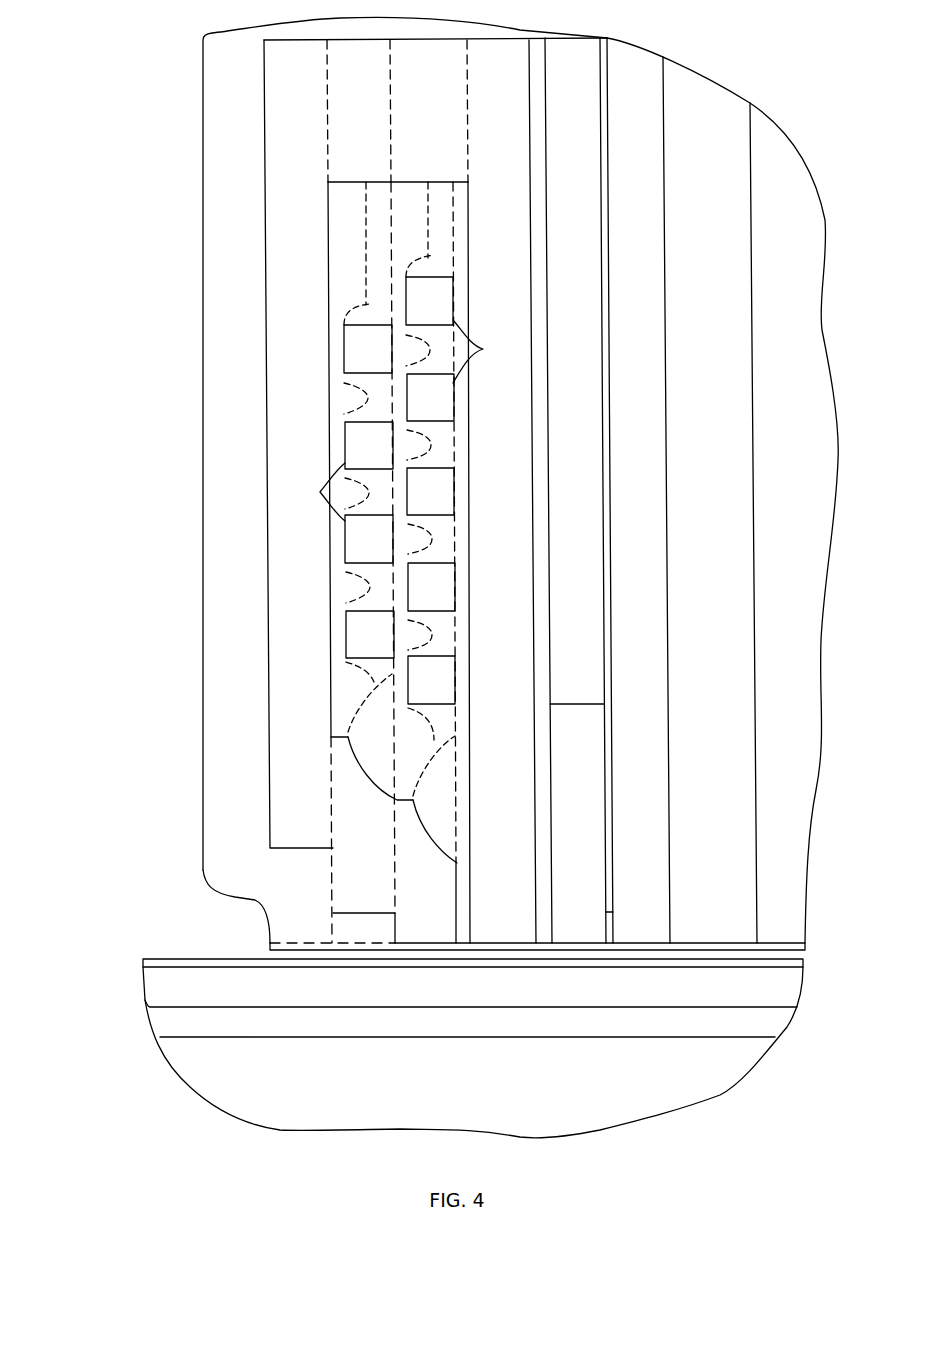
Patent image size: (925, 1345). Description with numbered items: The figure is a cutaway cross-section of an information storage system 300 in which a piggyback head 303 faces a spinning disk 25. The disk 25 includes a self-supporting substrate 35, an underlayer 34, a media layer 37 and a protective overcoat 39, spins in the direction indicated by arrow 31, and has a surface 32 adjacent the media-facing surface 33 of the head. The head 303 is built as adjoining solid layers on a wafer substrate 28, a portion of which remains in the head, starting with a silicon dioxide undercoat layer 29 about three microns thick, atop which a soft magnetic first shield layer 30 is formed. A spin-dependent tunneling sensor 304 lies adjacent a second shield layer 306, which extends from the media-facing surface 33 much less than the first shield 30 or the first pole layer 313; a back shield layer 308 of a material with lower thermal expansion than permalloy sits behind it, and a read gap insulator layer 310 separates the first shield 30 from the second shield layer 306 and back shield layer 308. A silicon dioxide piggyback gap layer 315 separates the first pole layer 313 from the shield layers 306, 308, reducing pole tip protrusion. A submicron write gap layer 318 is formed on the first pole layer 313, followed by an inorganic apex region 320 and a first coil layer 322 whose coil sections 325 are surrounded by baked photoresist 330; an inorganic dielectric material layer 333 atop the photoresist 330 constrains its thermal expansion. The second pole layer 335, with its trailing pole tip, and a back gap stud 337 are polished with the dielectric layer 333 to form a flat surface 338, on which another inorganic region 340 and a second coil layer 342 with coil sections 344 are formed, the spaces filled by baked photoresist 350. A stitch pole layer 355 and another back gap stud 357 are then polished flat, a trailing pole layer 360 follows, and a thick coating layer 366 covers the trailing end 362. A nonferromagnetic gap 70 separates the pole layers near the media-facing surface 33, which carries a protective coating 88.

The information storage system 300 is at (128, 72).
The trailing end 362 is at (201, 422).
The coating layer 366 is at (217, 530).
The back gap stud 357 is at (374, 115).
The back gap stud 337 is at (409, 115).
The flat surface 338 is at (388, 157).
The second coil layer 342 is at (366, 302).
The first coil layer 322 is at (436, 253).
The coil sections 325 is at (467, 351).
The baked photoresist 350 is at (345, 400).
The coil sections 344 is at (351, 475).
The inorganic dielectric material layer 333 is at (395, 584).
The baked photoresist 330 is at (456, 630).
The write gap layer 318 is at (469, 435).
The first pole layer 313 is at (518, 558).
The piggyback gap layer 315 is at (527, 673).
The trailing pole layer 360 is at (317, 701).
The inorganic region 340 is at (360, 778).
The inorganic apex region 320 is at (425, 842).
The stitch pole layer 355 is at (380, 835).
The second pole layer 335 is at (444, 907).
The back shield layer 308 is at (593, 541).
The second shield layer 306 is at (593, 779).
The read gap insulator layer 310 is at (611, 299).
The spin-dependent tunneling sensor 304 is at (614, 927).
The shield layer 30 is at (651, 605).
The undercoat layer 29 is at (721, 450).
The wafer substrate 28 is at (812, 497).
The protective coating 88 is at (716, 940).
The surface 32 is at (175, 956).
The media-facing surface 33 is at (349, 952).
The media layer 37 is at (412, 998).
The underlayer 34 is at (613, 1030).
The protective overcoat 39 is at (707, 968).
The self-supporting substrate 35 is at (488, 1111).
The arrow 31 is at (258, 1084).
The gap 70 is at (467, 951).
The disk 25 is at (125, 1038).
The piggyback head 303 is at (138, 582).